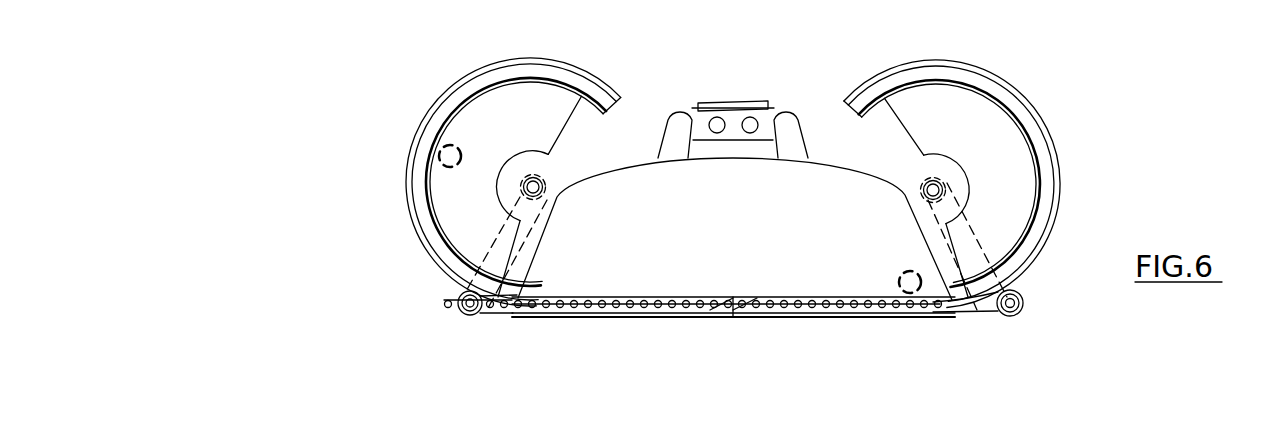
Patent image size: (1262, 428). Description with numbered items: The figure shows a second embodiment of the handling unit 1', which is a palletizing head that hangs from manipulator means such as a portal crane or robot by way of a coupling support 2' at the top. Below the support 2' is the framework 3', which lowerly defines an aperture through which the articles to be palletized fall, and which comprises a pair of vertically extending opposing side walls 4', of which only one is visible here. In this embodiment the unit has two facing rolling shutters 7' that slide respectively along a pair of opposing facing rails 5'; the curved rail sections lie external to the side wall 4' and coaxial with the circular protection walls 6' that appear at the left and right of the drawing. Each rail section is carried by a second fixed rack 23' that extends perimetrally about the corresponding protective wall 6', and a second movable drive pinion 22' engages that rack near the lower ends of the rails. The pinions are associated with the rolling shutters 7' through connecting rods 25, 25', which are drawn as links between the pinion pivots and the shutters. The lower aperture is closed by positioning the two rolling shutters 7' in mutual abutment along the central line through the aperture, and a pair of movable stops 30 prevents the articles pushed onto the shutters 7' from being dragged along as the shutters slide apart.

The handling unit 1' is at (769, 190).
The support 2' is at (735, 61).
The framework 3' is at (755, 86).
The side wall 4' is at (735, 229).
The rail 5' is at (762, 183).
The circular protection wall 6' is at (825, 159).
The rolling shutter 7' is at (699, 247).
The second movable drive pinion 22' is at (732, 264).
The second fixed rack 23' is at (819, 149).
The connecting rod 25 is at (443, 330).
The connecting rod 25' is at (1020, 312).
The movable stop 30 is at (447, 153).